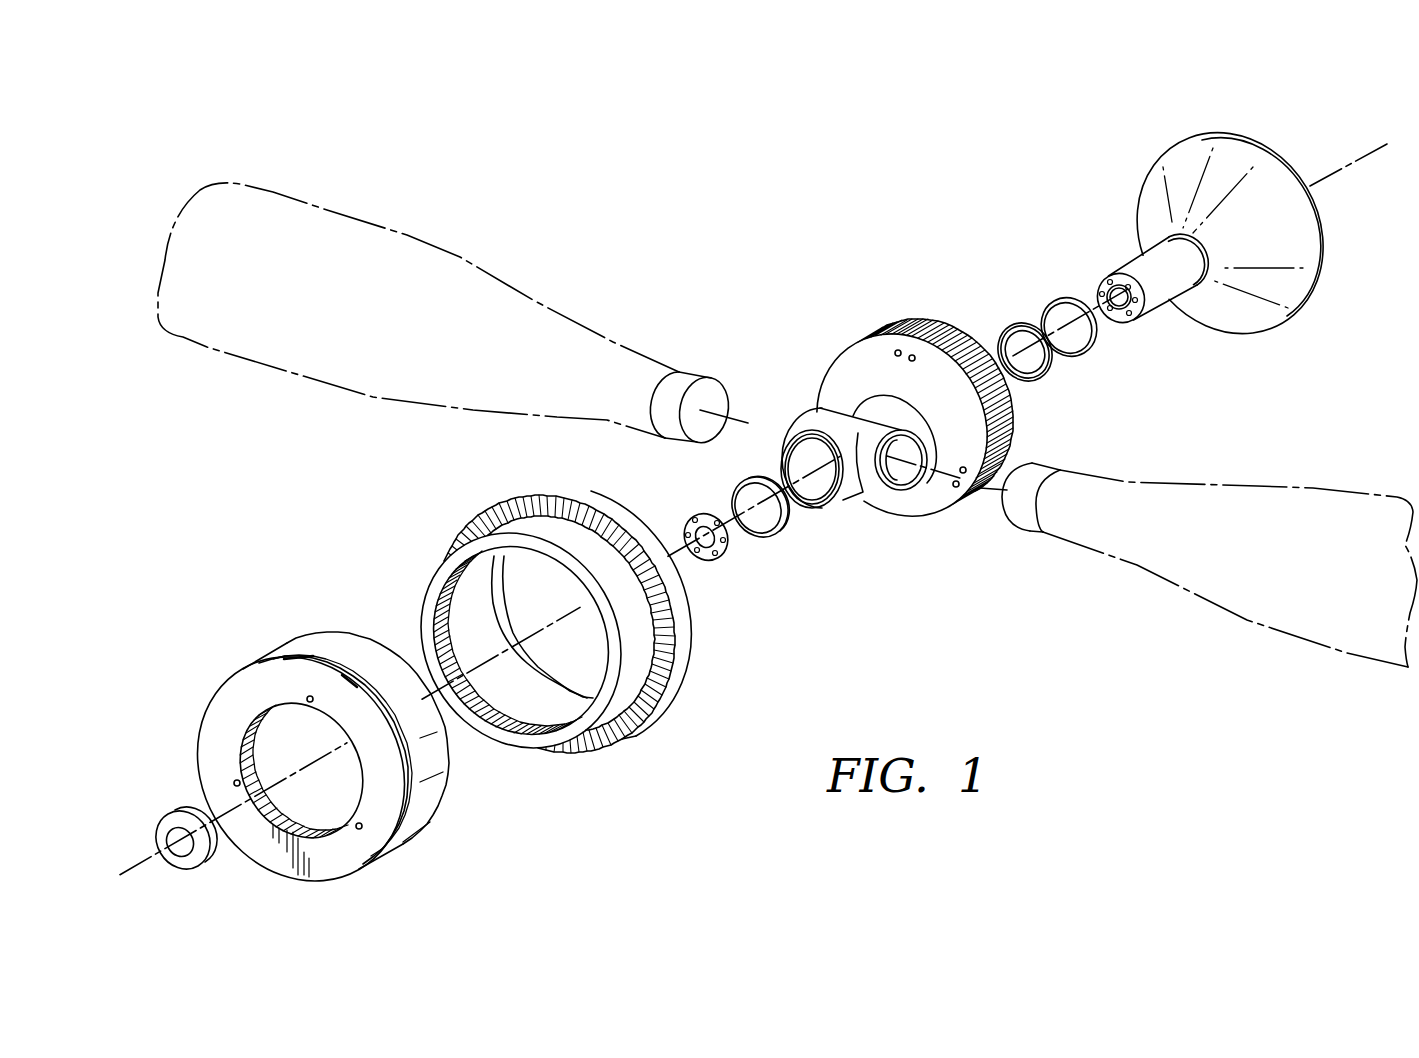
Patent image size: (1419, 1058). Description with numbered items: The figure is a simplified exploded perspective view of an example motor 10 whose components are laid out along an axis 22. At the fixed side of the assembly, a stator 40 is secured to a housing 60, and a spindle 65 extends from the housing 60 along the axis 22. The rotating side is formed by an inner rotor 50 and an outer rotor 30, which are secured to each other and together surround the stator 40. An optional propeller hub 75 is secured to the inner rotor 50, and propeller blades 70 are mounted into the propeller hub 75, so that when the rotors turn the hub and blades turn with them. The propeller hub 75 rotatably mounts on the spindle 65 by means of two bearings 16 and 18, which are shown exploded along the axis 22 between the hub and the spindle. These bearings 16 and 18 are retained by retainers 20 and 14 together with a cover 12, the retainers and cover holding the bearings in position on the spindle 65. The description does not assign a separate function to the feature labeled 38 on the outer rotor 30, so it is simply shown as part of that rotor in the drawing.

The motor 10 is at (758, 288).
The cover 12 is at (160, 830).
The retainer 14 is at (684, 530).
The bearing 16 is at (786, 537).
The bearing 18 is at (1003, 331).
The retainer 20 is at (1060, 300).
The axis 22 is at (1338, 165).
The outer rotor 30 is at (267, 655).
The groove 38 is at (412, 802).
The stator 40 is at (543, 538).
The inner rotor 50 is at (890, 320).
The housing 60 is at (1157, 152).
The spindle 65 is at (1163, 291).
The propeller blades 70 is at (460, 257).
The propeller hub 75 is at (808, 420).